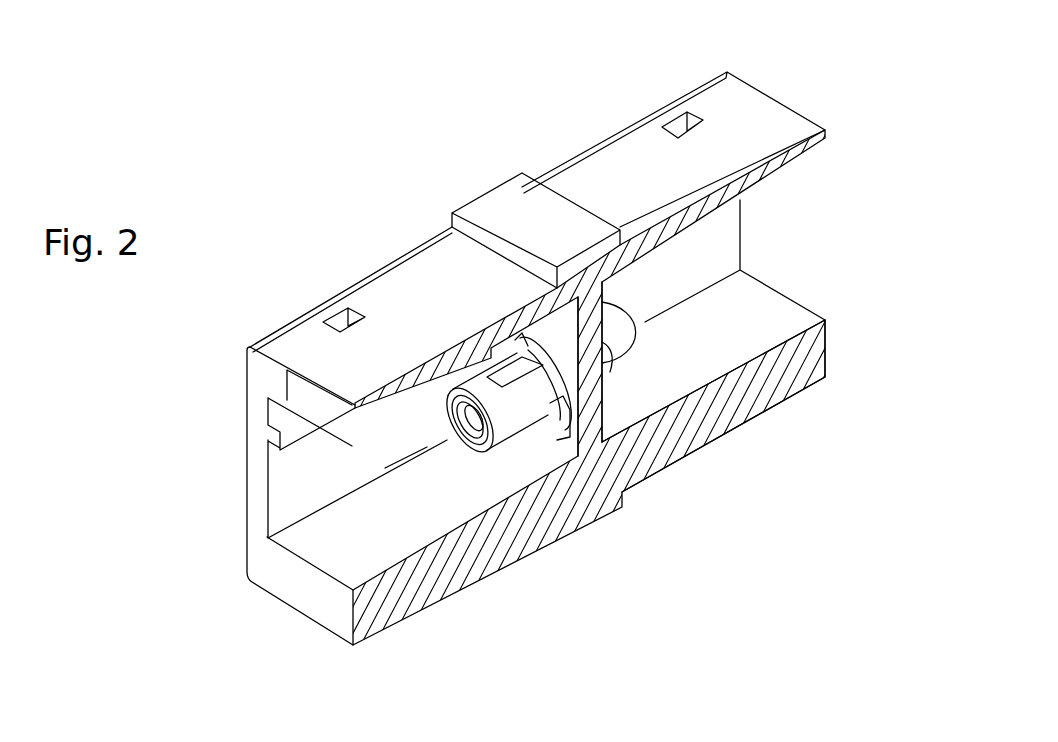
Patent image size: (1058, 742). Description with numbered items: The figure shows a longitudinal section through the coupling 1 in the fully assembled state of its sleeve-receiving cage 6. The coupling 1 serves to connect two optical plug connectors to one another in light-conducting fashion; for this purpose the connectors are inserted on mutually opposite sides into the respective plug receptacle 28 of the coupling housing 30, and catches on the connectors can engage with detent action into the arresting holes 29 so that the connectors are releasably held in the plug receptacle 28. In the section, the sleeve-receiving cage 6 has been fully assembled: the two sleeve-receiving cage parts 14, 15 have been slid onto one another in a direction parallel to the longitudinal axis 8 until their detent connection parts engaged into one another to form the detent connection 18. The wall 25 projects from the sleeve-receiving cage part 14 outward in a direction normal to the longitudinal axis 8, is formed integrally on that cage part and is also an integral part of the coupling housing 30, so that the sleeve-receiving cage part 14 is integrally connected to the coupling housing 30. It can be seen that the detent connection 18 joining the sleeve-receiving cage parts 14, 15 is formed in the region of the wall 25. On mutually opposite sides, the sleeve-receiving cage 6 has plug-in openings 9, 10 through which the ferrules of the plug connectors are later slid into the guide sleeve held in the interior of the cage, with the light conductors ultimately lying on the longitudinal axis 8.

The coupling 1 is at (534, 128).
The sleeve-receiving cage 6 is at (533, 395).
The longitudinal axis 8 is at (670, 305).
The plug-in opening 9 is at (478, 410).
The plug-in opening 10 is at (645, 345).
The sleeve-receiving cage part 14 is at (512, 423).
The sleeve-receiving cage part 15 is at (625, 355).
The detent connection 18 is at (520, 340).
The wall 25 is at (587, 397).
The plug receptacle 28 is at (310, 535).
The arresting hole 29 is at (342, 320).
The coupling housing 30 is at (758, 390).